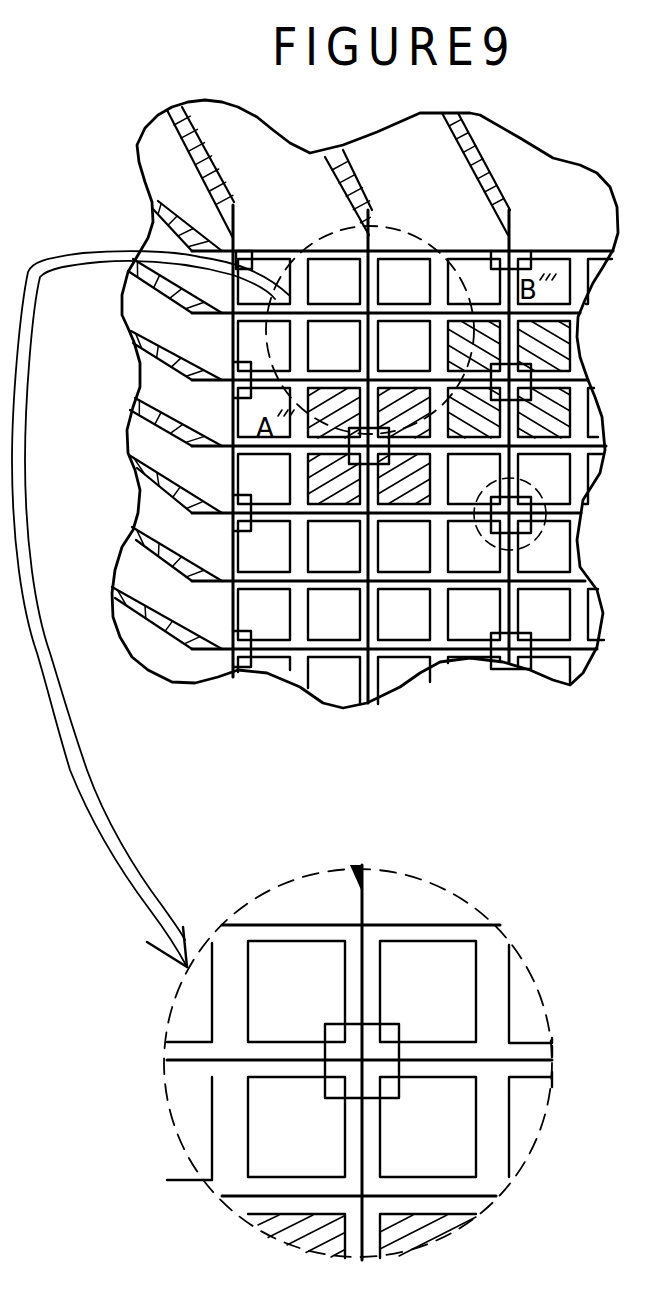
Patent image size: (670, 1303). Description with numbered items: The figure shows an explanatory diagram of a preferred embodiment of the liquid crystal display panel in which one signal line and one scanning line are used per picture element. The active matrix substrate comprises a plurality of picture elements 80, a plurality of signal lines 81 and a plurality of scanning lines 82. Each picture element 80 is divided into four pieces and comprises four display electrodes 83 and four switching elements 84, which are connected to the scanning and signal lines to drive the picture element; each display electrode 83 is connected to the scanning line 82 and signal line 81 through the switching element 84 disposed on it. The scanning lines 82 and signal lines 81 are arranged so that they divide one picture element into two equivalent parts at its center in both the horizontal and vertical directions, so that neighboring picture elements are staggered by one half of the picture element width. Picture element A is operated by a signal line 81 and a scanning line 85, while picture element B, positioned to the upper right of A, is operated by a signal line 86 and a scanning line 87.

The picture element 80 is at (497, 552).
The signal line 81 is at (360, 178).
The scanning line 82 is at (154, 286).
The display electrode 83 is at (362, 1059).
The switching element 84 is at (399, 1088).
The scanning line 85 is at (150, 420).
The signal line 86 is at (487, 165).
The scanning line 87 is at (137, 363).